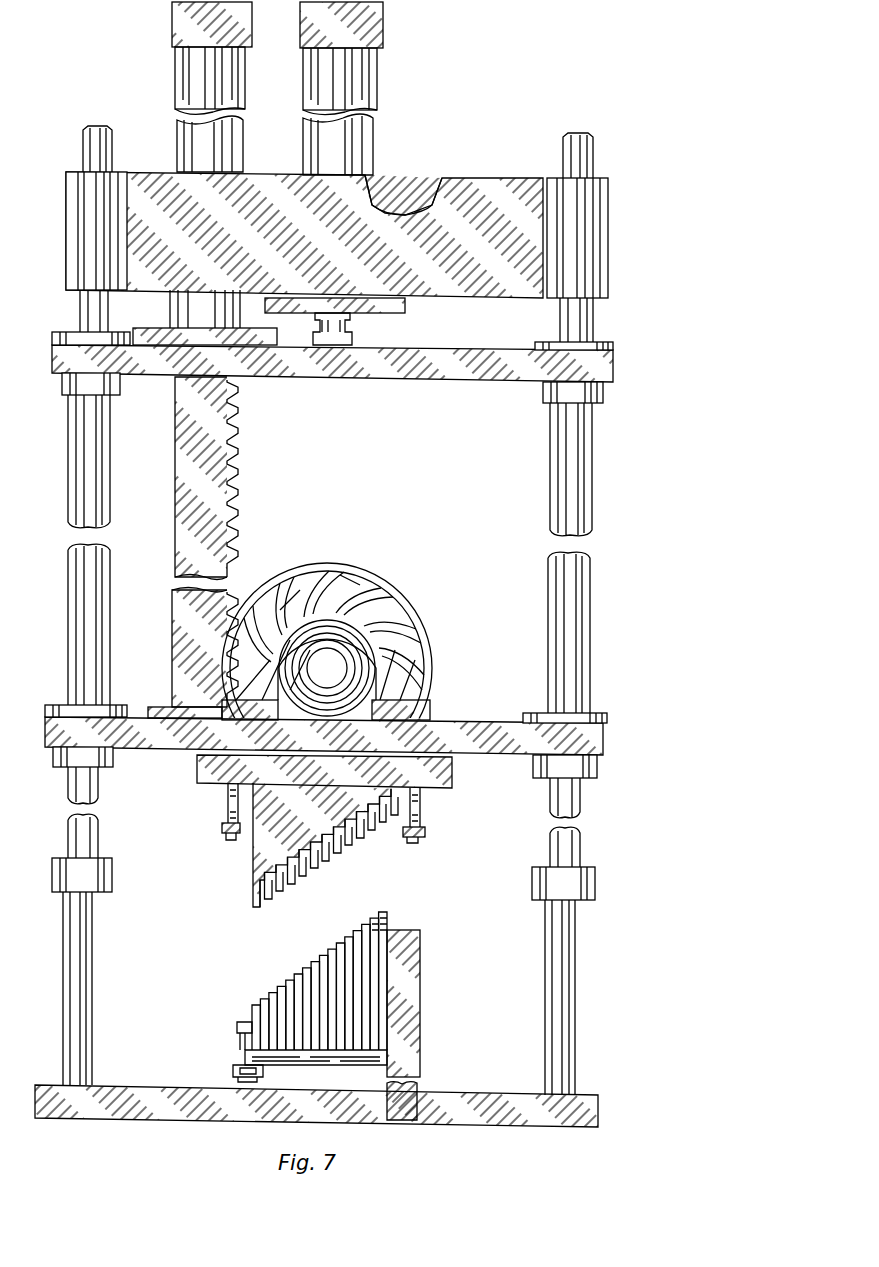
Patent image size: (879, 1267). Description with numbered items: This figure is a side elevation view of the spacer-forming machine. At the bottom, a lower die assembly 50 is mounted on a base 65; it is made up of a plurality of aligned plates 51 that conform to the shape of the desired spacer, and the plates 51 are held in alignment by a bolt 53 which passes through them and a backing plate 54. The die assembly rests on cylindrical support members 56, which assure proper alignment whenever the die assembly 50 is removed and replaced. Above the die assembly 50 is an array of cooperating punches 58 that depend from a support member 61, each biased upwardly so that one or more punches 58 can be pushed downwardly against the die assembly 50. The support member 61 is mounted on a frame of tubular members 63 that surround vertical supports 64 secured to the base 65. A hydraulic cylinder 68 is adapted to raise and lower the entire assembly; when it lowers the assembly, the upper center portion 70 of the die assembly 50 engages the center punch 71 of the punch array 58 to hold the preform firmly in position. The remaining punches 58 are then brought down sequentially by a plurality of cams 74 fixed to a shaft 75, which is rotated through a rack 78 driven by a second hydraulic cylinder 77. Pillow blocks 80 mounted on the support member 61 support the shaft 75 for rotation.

The lower die assembly 50 is at (344, 980).
The plates 51 is at (293, 978).
The bolt 53 is at (237, 1025).
The backing plate 54 is at (421, 985).
The cylindrical support members 56 is at (245, 1054).
The punches 58 is at (255, 868).
The support member 61 is at (513, 756).
The tubular members 63 is at (76, 445).
The vertical supports 64 is at (455, 380).
The base 65 is at (590, 1095).
The hydraulic cylinder 68 is at (376, 70).
The upper center portion 70 is at (383, 914).
The center punch 71 is at (384, 912).
The cams 74 is at (345, 582).
The shaft 75 is at (350, 666).
The hydraulic cylinder 77 is at (177, 86).
The rack 78 is at (238, 455).
The pillow blocks 80 is at (372, 650).